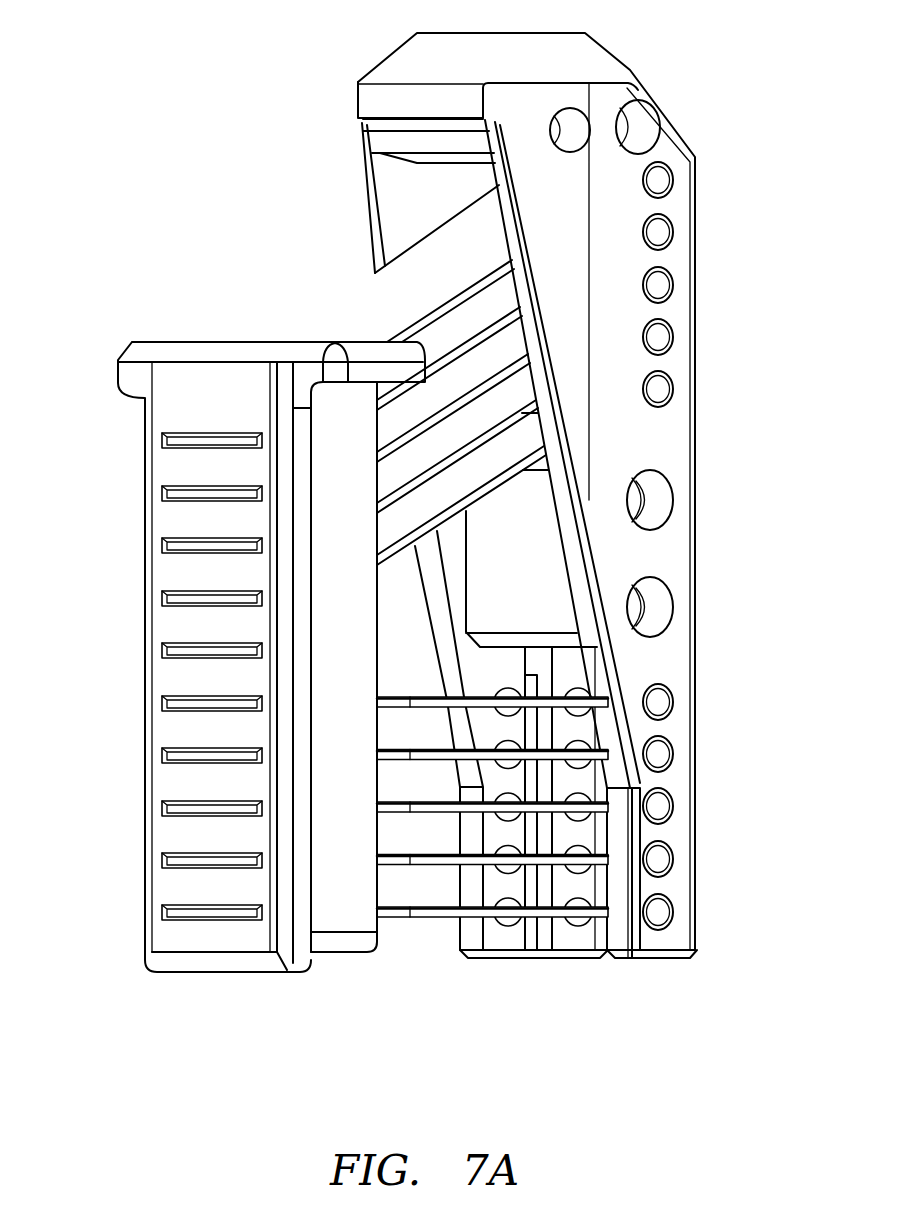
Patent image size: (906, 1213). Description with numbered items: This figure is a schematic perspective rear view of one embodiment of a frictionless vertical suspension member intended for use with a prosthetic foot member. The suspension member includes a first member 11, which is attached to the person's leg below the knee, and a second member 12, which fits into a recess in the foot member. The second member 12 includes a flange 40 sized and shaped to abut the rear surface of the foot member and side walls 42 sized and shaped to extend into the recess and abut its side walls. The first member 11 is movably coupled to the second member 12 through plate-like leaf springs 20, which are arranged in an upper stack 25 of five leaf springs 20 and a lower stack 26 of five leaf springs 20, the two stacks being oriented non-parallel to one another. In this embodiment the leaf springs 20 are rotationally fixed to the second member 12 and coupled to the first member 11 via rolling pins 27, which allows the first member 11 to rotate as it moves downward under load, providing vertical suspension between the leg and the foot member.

The first member 11 is at (657, 441).
The second member 12 is at (193, 398).
The leaf springs 20 is at (385, 300).
The upper stack 25 is at (128, 430).
The lower stack 26 is at (128, 693).
The rolling pins 27 is at (664, 179).
The flange 40 is at (300, 920).
The side walls 42 is at (345, 907).